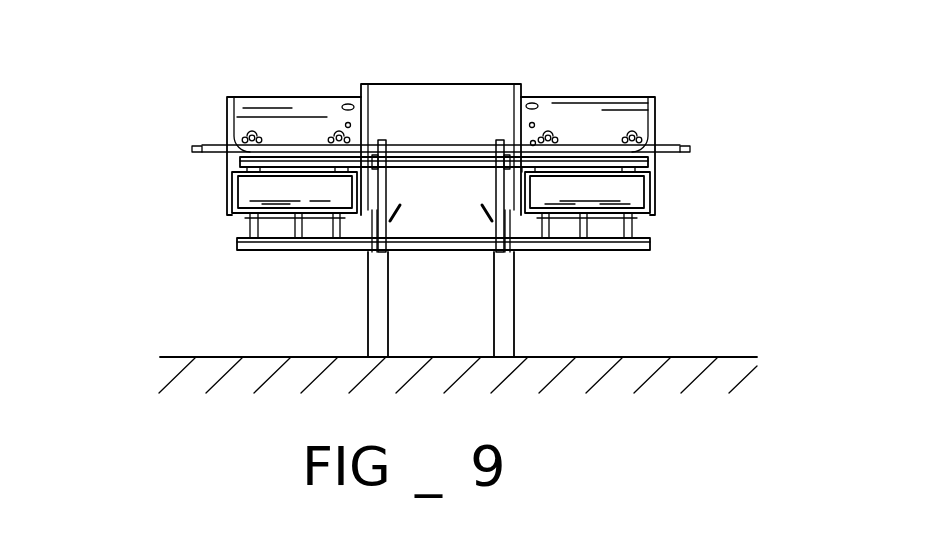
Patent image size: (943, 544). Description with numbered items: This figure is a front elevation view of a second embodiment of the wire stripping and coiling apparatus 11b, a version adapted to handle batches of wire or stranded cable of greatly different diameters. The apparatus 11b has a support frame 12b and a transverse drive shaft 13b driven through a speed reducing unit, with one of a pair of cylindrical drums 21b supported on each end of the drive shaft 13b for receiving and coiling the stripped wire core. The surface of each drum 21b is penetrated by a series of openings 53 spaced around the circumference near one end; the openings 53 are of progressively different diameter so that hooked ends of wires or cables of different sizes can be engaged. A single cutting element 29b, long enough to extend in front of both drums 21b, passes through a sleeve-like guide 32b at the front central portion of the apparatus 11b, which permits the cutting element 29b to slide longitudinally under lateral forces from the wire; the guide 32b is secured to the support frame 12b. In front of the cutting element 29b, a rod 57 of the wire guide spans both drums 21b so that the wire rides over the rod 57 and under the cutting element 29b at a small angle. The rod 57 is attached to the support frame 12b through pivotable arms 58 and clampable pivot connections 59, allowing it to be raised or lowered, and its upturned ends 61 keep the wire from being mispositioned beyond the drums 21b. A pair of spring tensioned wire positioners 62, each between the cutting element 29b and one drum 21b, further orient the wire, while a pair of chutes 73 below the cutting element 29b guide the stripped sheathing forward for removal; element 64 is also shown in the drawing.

The wire stripping and coiling apparatus 11b is at (678, 74).
The support frame 12b is at (367, 295).
The transverse drive shaft 13b is at (193, 148).
The cylindrical drum 21b is at (238, 96).
The cutting element 29b is at (574, 140).
The sleeve-like guide 32b is at (422, 85).
The openings 53 is at (532, 102).
The rod 57 is at (298, 150).
The pivotable arms 58 is at (388, 185).
The clampable pivot connections 59 is at (390, 220).
The upturned ends 61 is at (232, 112).
The spring tensioned wire positioner 62 is at (256, 122).
The base plate 64 is at (236, 227).
The chute 73 is at (236, 197).